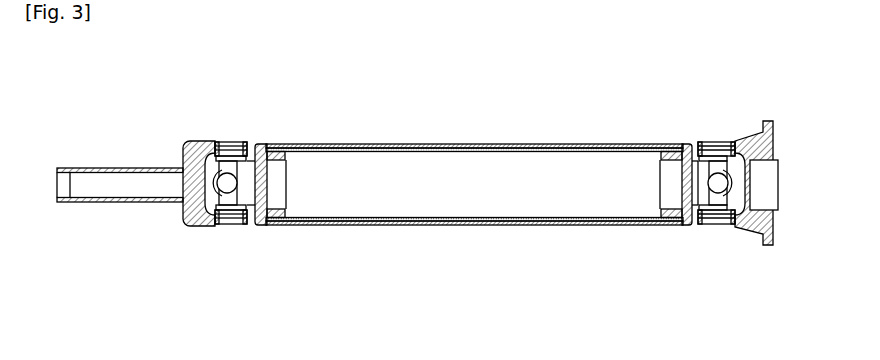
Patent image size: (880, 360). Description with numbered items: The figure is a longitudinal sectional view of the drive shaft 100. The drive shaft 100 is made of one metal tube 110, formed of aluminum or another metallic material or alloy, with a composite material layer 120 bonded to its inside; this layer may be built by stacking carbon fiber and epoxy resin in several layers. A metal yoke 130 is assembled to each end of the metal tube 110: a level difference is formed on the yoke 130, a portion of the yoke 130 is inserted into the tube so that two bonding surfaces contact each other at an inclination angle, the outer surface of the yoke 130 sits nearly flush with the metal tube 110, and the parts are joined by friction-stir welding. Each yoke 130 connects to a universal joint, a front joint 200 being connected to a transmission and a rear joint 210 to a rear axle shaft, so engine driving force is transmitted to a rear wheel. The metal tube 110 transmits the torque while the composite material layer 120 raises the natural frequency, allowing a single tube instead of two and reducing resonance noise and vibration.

The drive shaft 100 is at (475, 204).
The metal tube 110 is at (437, 143).
The composite material layer 120 is at (445, 217).
The metal yoke 130 is at (256, 228).
The front joint 200 is at (222, 246).
The rear joint 210 is at (743, 246).